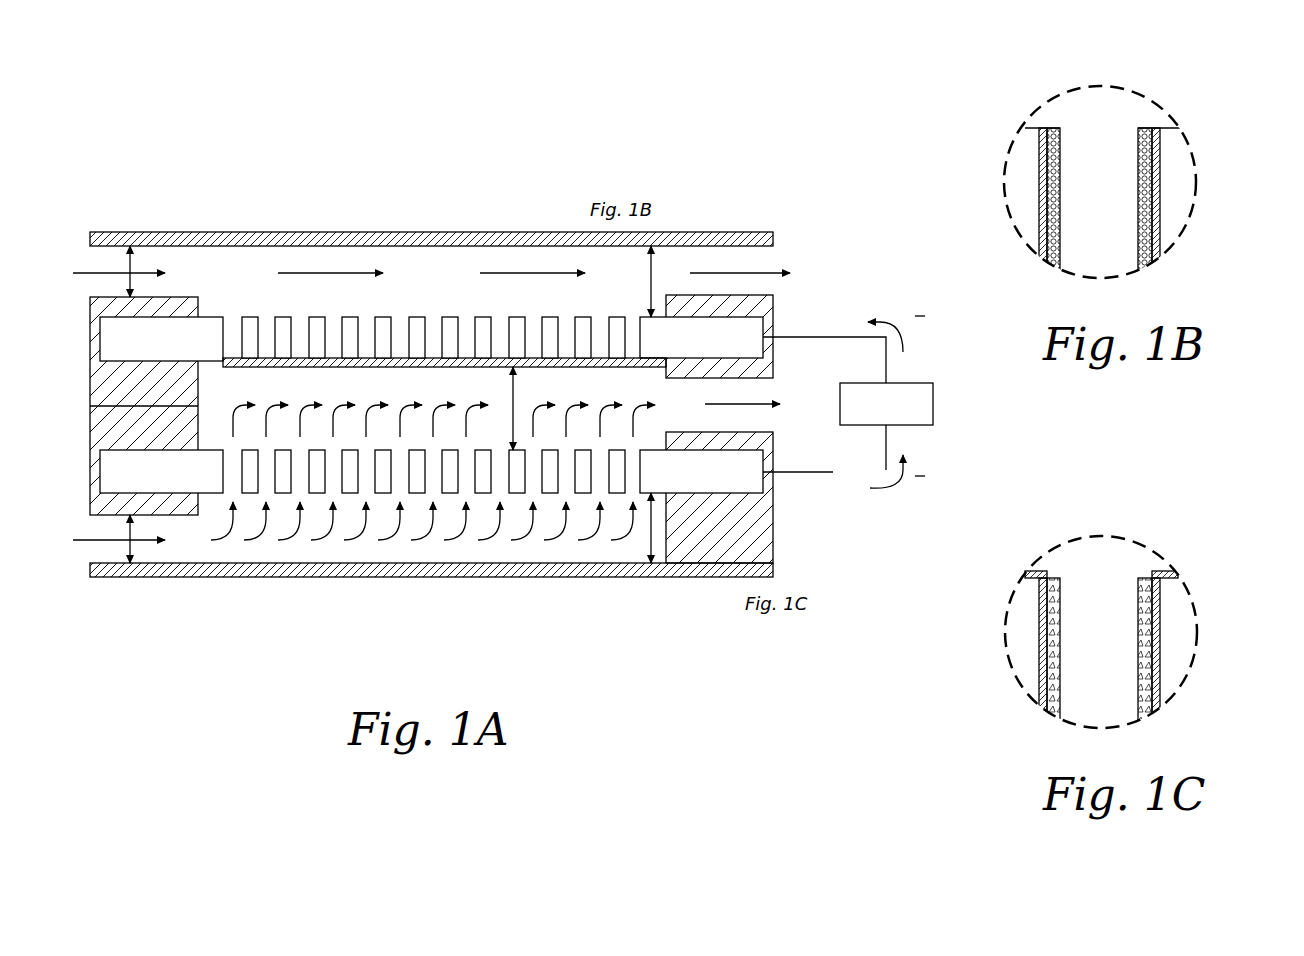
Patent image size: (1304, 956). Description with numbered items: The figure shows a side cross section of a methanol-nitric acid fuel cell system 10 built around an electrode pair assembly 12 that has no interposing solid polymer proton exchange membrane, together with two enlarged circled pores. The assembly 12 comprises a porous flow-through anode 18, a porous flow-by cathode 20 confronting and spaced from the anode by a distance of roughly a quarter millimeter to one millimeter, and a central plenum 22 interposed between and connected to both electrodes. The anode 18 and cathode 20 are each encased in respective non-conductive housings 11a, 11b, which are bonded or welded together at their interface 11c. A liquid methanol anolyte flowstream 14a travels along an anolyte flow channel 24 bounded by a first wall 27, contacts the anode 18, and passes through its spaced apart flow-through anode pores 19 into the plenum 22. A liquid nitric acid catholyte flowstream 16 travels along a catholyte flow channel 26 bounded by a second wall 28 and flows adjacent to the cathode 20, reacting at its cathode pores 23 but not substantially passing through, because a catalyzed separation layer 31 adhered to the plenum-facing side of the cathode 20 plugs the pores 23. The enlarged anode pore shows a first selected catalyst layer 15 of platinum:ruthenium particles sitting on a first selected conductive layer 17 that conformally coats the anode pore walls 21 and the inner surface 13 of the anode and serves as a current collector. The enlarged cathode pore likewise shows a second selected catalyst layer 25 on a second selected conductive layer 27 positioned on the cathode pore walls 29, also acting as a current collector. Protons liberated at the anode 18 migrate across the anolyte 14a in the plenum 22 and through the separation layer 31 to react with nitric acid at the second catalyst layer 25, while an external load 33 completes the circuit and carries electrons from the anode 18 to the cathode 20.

In FIG. 1A, the methanol-nitric acid fuel cell system 10 is at (440, 186).
In FIG. 1A, the non-conductive housing 11a is at (92, 488).
In FIG. 1A, the non-conductive housing 11b is at (92, 322).
In FIG. 1A, the interface 11c is at (125, 412).
In FIG. 1A, the electrode pair assembly 12 is at (48, 310).
In FIG. 1C, the inner surface 13 is at (1035, 580).
In FIG. 1A, the liquid methanol anolyte flowstream 14a is at (150, 542).
In FIG. 1C, the first selected catalyst layer 15 is at (1058, 625).
In FIG. 1A, the liquid nitric acid catholyte flowstream 16 is at (80, 273).
In FIG. 1C, the first selected conductive layer 17 is at (1043, 578).
In FIG. 1A, the porous flow-through anode 18 is at (118, 472).
In FIG. 1A, the flow-through anode pores 19 is at (330, 495).
In FIG. 1C, the flow-through anode pores 19 is at (1118, 595).
In FIG. 1A, the porous flow-by cathode 20 is at (118, 337).
In FIG. 1C, the anode pore walls 21 is at (1160, 625).
In FIG. 1A, the central plenum 22 is at (372, 384).
In FIG. 1A, the cathode pores 23 is at (326, 312).
In FIG. 1B, the cathode pores 23 is at (1110, 145).
In FIG. 1A, the anolyte flow channel 24 is at (130, 545).
In FIG. 1B, the second selected catalyst layer 25 is at (1062, 160).
In FIG. 1A, the catholyte flow channel 26 is at (135, 264).
In FIG. 1A, the second selected conductive layer 27 is at (528, 578).
In FIG. 1B, the second selected conductive layer 27 is at (1042, 128).
In FIG. 1A, the second wall 28 is at (540, 233).
In FIG. 1B, the cathode pore walls 29 is at (1160, 185).
In FIG. 1A, the catalyzed separation layer 31 is at (397, 320).
In FIG. 1A, the external load 33 is at (848, 403).